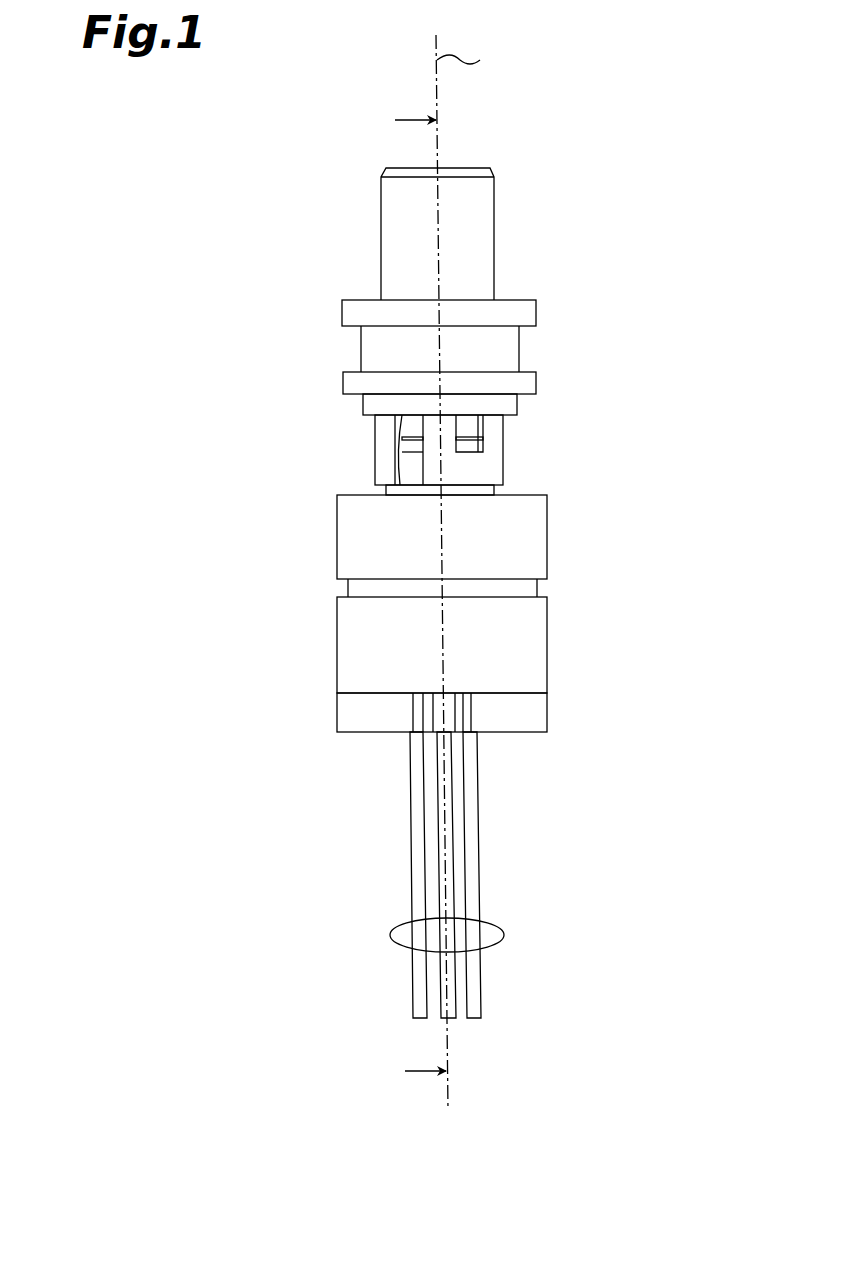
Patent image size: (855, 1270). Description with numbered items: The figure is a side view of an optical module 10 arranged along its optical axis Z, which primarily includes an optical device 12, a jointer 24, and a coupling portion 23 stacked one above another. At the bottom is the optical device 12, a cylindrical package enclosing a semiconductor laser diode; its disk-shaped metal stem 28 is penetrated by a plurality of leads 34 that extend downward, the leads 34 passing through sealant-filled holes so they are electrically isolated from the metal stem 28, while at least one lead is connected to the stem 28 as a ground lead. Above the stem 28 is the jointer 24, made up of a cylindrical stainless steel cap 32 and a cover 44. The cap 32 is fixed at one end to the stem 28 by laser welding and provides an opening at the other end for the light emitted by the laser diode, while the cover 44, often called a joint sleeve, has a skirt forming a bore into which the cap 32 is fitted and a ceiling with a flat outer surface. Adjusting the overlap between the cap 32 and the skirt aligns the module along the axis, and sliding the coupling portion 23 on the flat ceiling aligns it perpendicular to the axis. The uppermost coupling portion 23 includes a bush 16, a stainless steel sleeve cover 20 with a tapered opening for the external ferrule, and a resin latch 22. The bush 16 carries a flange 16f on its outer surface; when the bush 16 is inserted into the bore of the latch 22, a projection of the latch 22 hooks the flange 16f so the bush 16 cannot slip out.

The optical module 10 is at (674, 92).
The optical device 12 is at (298, 649).
The bush 16 is at (410, 467).
The flange 16f is at (413, 445).
The sleeve cover 20 is at (487, 244).
The latch 22 is at (500, 450).
The coupling portion 23 is at (619, 170).
The jointer 24 is at (619, 495).
The stem 28 is at (540, 710).
The cap 32 is at (538, 633).
The leads 34 is at (500, 946).
The cover 44 is at (537, 527).